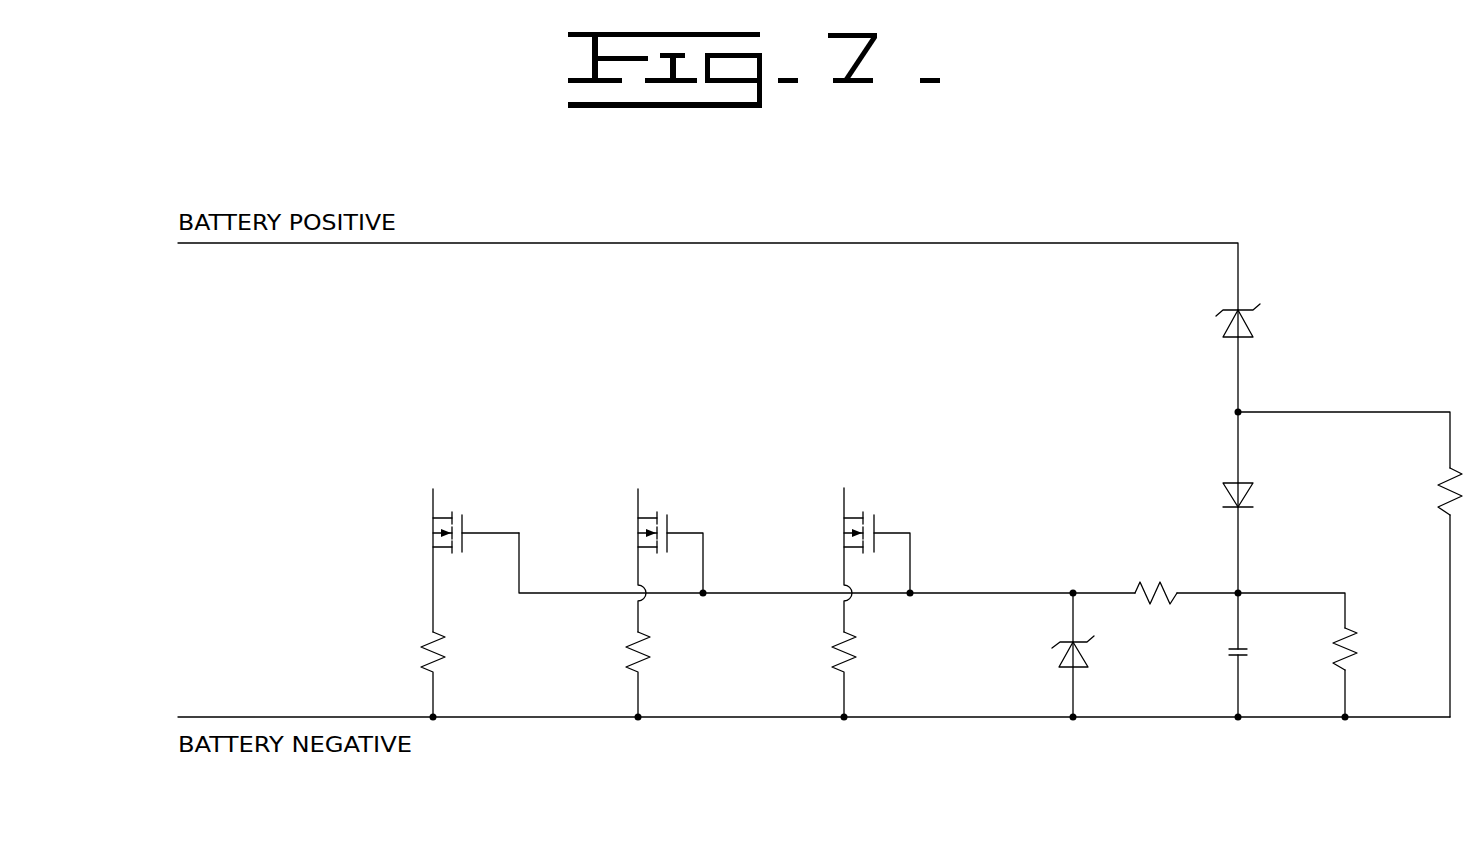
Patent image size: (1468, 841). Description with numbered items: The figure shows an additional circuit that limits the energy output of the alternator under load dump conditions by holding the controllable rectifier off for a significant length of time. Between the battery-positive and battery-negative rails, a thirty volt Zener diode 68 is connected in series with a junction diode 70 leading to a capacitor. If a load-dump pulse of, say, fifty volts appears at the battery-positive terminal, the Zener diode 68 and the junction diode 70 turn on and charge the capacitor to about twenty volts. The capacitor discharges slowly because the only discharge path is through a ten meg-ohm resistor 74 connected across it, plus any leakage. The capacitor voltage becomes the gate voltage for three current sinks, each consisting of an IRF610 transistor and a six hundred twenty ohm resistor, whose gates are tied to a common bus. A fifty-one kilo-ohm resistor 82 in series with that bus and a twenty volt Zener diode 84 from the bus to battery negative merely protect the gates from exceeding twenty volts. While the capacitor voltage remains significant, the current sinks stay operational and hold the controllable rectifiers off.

The 51 k ohm resistor 82 is at (1137, 588).
The twenty volt Zener diode 84 is at (1057, 657).
The ten meg-ohm resistor 74 is at (1348, 665).
The junction diode 70 is at (1223, 495).
The thirty volt Zener diode 68 is at (1222, 330).